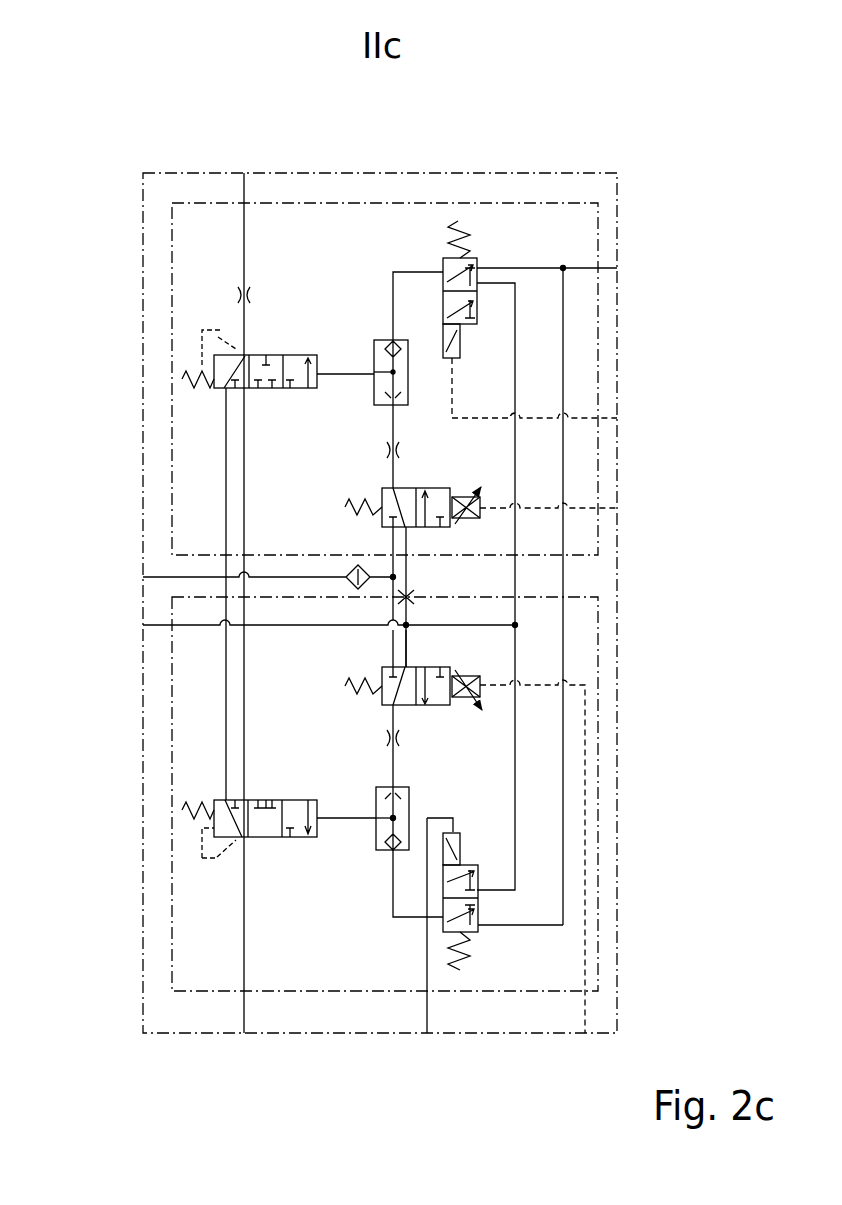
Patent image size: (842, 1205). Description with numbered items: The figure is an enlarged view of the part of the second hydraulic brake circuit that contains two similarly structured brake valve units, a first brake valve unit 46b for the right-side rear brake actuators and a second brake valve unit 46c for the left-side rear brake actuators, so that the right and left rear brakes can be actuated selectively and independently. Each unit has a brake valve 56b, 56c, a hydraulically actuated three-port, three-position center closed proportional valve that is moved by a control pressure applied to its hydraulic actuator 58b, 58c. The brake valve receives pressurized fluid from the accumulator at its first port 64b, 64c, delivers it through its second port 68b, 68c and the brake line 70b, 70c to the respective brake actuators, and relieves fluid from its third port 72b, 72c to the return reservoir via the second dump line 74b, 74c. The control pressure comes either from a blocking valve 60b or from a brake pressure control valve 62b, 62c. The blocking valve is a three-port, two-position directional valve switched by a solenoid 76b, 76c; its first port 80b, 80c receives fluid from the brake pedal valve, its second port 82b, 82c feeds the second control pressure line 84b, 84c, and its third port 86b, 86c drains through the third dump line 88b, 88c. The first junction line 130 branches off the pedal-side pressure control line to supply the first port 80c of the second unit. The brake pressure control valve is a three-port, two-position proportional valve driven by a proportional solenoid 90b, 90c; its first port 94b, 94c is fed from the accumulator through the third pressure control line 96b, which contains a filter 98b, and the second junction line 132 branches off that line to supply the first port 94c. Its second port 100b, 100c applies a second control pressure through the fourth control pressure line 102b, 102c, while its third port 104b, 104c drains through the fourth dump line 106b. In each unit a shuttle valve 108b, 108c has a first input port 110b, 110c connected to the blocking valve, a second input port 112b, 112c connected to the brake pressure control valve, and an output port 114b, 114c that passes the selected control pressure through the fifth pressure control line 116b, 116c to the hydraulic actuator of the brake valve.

The first brake valve unit 46b is at (495, 200).
The second brake valve unit 46c is at (530, 998).
The brake valve 56b is at (190, 357).
The brake valve 56c is at (190, 826).
The hydraulic actuator 58b is at (322, 388).
The hydraulic actuator 58c is at (322, 838).
The blocking valve 60b is at (482, 236).
The brake pressure control valve 62b is at (507, 494).
The brake pressure control valve 62c is at (507, 667).
The first port 64b is at (250, 388).
The first port 64c is at (250, 800).
The second port 68b is at (238, 352).
The second port 68c is at (242, 852).
The brake line 70b is at (244, 185).
The brake line 70c is at (244, 960).
The third port 72b is at (226, 390).
The third port 72c is at (226, 800).
The second dump line 74b is at (226, 455).
The second dump line 74c is at (226, 690).
The solenoid 76b is at (460, 343).
The solenoid 76c is at (456, 843).
The first port 80b is at (478, 258).
The first port 80c is at (478, 925).
The second port 82b is at (442, 258).
The second port 82c is at (443, 918).
The second control pressure line 84b is at (411, 272).
The second control pressure line 84c is at (393, 917).
The third port 86b is at (477, 283).
The third port 86c is at (478, 908).
The third dump line 88b is at (515, 373).
The third dump line 88c is at (518, 642).
The proportional solenoid 90b is at (480, 518).
The proportional solenoid 90c is at (480, 700).
The first port 94b is at (392, 528).
The first port 94c is at (390, 667).
The third pressure control line 96b is at (278, 576).
The filter 98b is at (393, 562).
The second port 100b is at (386, 489).
The second port 100c is at (393, 710).
The fourth control pressure line 102b is at (393, 432).
The fourth control pressure line 102c is at (393, 735).
The third port 104b is at (406, 528).
The third port 104c is at (406, 640).
The fourth dump line 106b is at (162, 625).
The shuttle valve 108b is at (366, 325).
The shuttle valve 108c is at (350, 867).
The first input port 110b is at (390, 340).
The first input port 110c is at (383, 852).
The second input port 112b is at (393, 410).
The second input port 112c is at (393, 780).
The output port 114b is at (375, 372).
The output port 114c is at (376, 818).
The fifth pressure control line 116b is at (353, 376).
The fifth pressure control line 116c is at (350, 812).
The first junction line 130 is at (563, 392).
The second junction line 132 is at (400, 584).